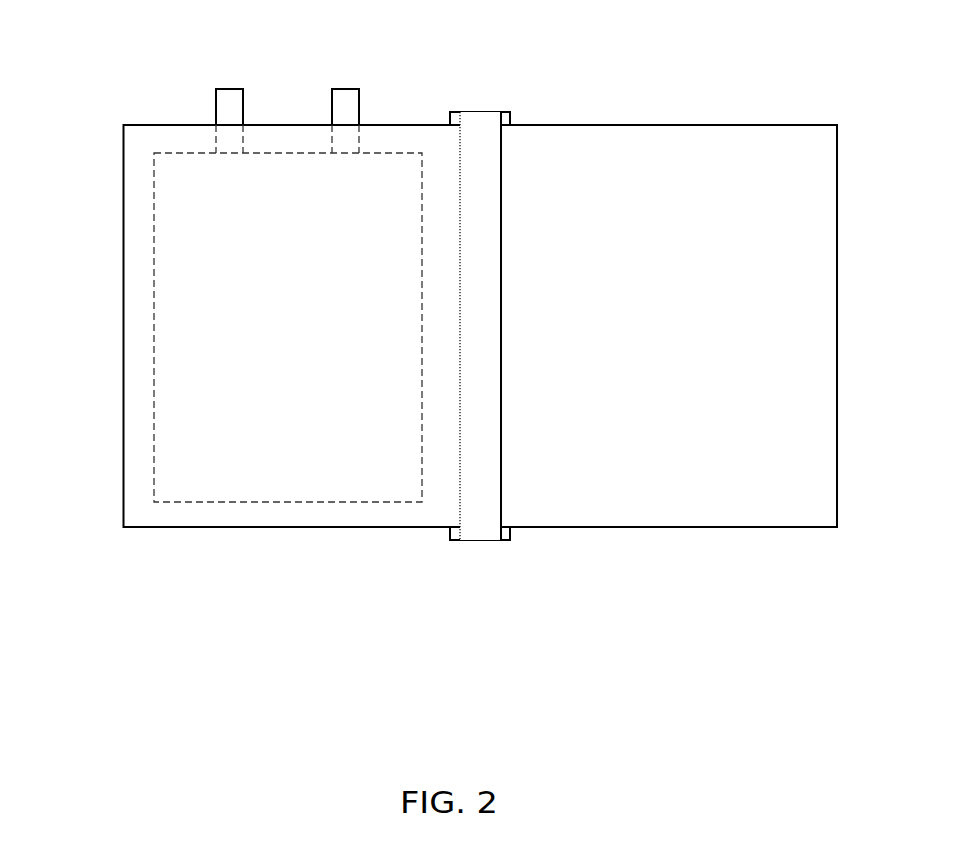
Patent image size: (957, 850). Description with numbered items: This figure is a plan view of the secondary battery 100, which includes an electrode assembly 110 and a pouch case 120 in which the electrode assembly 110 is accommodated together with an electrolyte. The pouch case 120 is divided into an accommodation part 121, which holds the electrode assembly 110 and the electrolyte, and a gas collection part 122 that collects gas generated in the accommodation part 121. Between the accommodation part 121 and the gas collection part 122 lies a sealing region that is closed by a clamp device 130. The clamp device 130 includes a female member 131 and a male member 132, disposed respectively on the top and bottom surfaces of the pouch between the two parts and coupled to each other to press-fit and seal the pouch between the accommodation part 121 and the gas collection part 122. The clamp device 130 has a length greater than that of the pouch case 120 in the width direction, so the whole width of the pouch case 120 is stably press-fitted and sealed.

The secondary battery 100 is at (731, 68).
The electrode assembly 110 is at (155, 330).
The pouch case 120 is at (399, 382).
The accommodation part 121 is at (392, 518).
The gas collection part 122 is at (382, 623).
The clamp device 130 is at (522, 270).
The female member 131 is at (512, 113).
The male member 132 is at (492, 188).